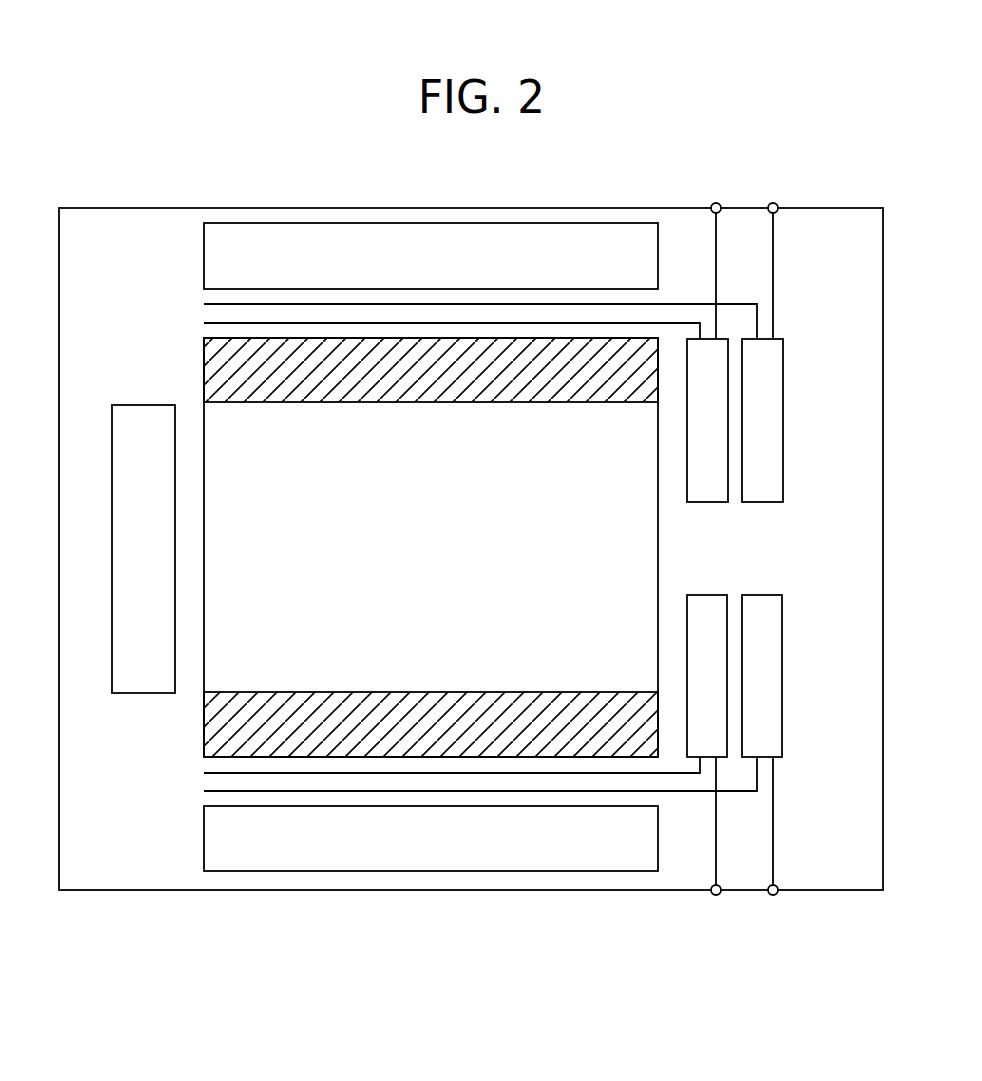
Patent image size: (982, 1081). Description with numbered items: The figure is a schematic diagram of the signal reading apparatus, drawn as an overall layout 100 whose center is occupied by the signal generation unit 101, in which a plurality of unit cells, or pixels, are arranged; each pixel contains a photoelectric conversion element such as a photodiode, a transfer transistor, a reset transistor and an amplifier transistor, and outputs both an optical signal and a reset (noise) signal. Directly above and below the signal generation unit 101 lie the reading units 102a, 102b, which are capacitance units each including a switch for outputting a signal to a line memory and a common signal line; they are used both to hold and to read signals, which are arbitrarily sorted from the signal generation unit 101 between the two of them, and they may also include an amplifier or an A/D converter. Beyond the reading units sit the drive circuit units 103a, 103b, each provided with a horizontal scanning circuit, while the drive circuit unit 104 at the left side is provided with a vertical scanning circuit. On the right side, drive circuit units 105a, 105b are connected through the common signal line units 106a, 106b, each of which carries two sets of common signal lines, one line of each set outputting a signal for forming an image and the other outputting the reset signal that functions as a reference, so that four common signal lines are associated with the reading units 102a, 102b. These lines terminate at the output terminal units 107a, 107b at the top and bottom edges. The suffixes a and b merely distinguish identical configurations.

The substrate 100 is at (570, 891).
The signal generation unit 101 is at (658, 532).
The reading unit 102a is at (204, 722).
The reading unit 102b is at (204, 366).
The drive circuit unit 103a is at (204, 834).
The drive circuit unit 103b is at (204, 252).
The drive circuit unit 104 is at (112, 448).
The drive circuit unit 105a is at (802, 595).
The drive circuit unit 105b is at (803, 339).
The common signal line unit 106a is at (192, 762).
The common signal line unit 106b is at (192, 293).
The output terminal unit 107a is at (777, 914).
The output terminal unit 107b is at (777, 184).